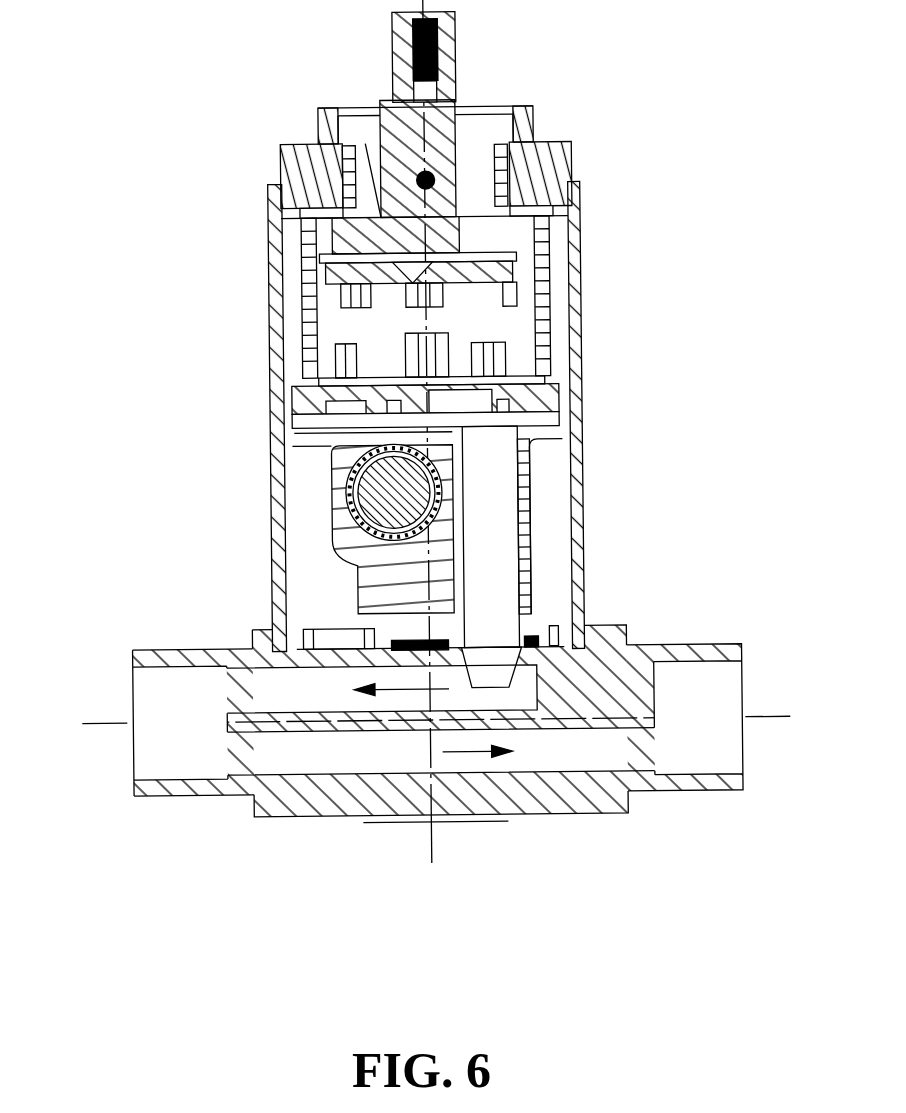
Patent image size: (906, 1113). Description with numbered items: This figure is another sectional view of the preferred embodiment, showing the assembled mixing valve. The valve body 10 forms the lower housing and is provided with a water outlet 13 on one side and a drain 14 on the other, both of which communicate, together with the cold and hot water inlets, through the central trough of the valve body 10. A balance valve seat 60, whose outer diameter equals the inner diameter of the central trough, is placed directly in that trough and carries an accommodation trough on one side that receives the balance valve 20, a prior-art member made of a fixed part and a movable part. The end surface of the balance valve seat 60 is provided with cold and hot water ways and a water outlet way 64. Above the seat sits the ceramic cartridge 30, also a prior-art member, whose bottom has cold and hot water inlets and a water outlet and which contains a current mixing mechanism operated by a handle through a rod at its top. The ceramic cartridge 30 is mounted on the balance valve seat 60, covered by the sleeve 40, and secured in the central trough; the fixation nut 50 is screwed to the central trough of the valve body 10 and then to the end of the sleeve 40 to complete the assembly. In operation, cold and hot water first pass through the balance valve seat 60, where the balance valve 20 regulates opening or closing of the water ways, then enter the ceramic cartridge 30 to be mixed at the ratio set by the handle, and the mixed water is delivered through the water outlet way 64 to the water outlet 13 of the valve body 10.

The valve body 10 is at (350, 802).
The water outlet 13 is at (153, 695).
The drain 14 is at (708, 689).
The balance valve 20 is at (350, 473).
The ceramic cartridge 30 is at (519, 247).
The sleeve 40 is at (578, 327).
The fixation nut 50 is at (539, 155).
The balance valve seat 60 is at (527, 480).
The water outlet way 64 is at (500, 537).